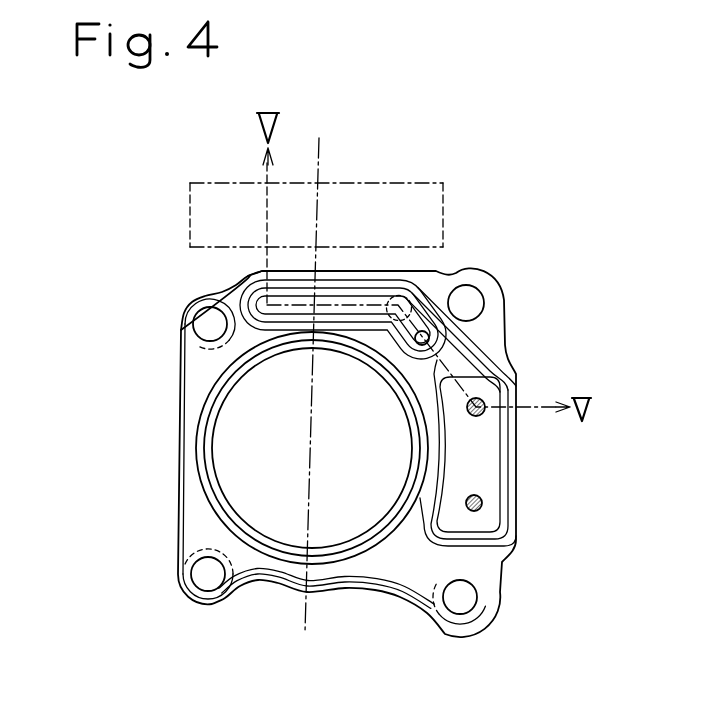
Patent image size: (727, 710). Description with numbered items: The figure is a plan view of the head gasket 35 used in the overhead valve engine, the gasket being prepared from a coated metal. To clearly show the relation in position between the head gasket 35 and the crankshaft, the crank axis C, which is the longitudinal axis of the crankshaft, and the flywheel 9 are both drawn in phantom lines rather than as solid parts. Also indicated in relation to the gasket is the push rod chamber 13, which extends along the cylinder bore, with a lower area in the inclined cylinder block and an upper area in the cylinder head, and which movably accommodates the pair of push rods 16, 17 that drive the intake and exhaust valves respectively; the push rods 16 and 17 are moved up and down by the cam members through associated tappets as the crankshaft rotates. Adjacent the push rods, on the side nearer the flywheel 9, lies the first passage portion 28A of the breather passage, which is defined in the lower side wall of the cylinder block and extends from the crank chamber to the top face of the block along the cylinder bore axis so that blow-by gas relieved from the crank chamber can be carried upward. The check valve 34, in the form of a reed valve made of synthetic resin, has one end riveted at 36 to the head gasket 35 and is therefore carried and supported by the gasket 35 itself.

The flywheel 9 is at (190, 212).
The push rod chamber 13 is at (487, 460).
The push rod 16 is at (483, 400).
The push rod 17 is at (480, 510).
The first passage portion 28A is at (405, 297).
The check valve 34 is at (437, 308).
The head gasket 35 is at (180, 378).
The rivet 36 is at (430, 338).
The crank axis C is at (312, 449).